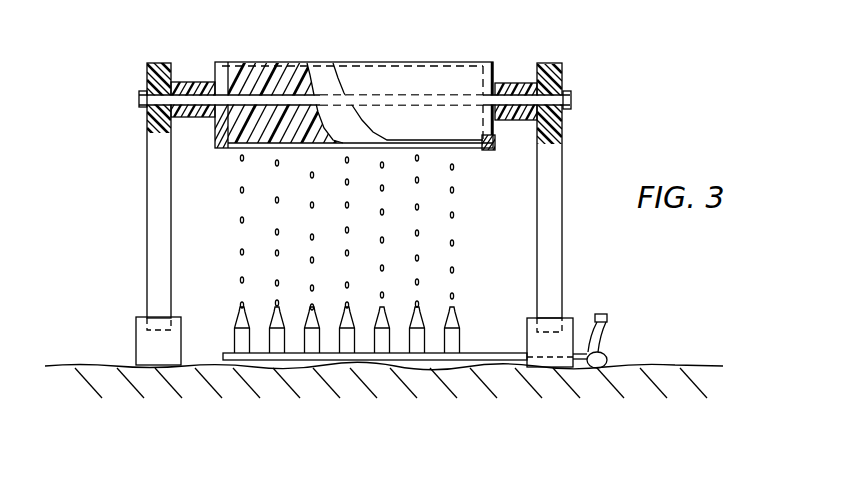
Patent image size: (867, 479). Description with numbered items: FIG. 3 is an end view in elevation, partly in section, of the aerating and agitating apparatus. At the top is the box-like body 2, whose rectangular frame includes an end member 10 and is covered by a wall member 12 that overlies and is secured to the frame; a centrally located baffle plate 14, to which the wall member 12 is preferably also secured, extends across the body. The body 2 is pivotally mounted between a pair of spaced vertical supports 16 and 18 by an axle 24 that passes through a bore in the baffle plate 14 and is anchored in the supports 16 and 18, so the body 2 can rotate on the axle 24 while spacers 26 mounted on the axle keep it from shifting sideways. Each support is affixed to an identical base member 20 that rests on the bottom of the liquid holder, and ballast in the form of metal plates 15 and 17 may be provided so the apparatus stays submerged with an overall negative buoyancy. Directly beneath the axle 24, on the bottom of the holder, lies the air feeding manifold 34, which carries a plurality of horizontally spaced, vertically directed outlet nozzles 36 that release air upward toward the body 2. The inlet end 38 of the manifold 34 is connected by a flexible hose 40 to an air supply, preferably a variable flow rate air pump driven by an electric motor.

The box-like body 2 is at (236, 46).
The end member 10 is at (397, 77).
The wall member 12 is at (278, 62).
The baffle plate 14 is at (322, 82).
The metal plate 15 is at (485, 144).
The vertical support 16 is at (562, 227).
The metal plate 17 is at (142, 317).
The vertical support 18 is at (148, 215).
The base member 20 is at (136, 350).
The axle 24 is at (198, 99).
The spacer 26 is at (517, 83).
The manifold 34 is at (397, 358).
The outlet nozzle 36 is at (237, 322).
The inlet end 38 is at (607, 352).
The flexible hose 40 is at (607, 328).